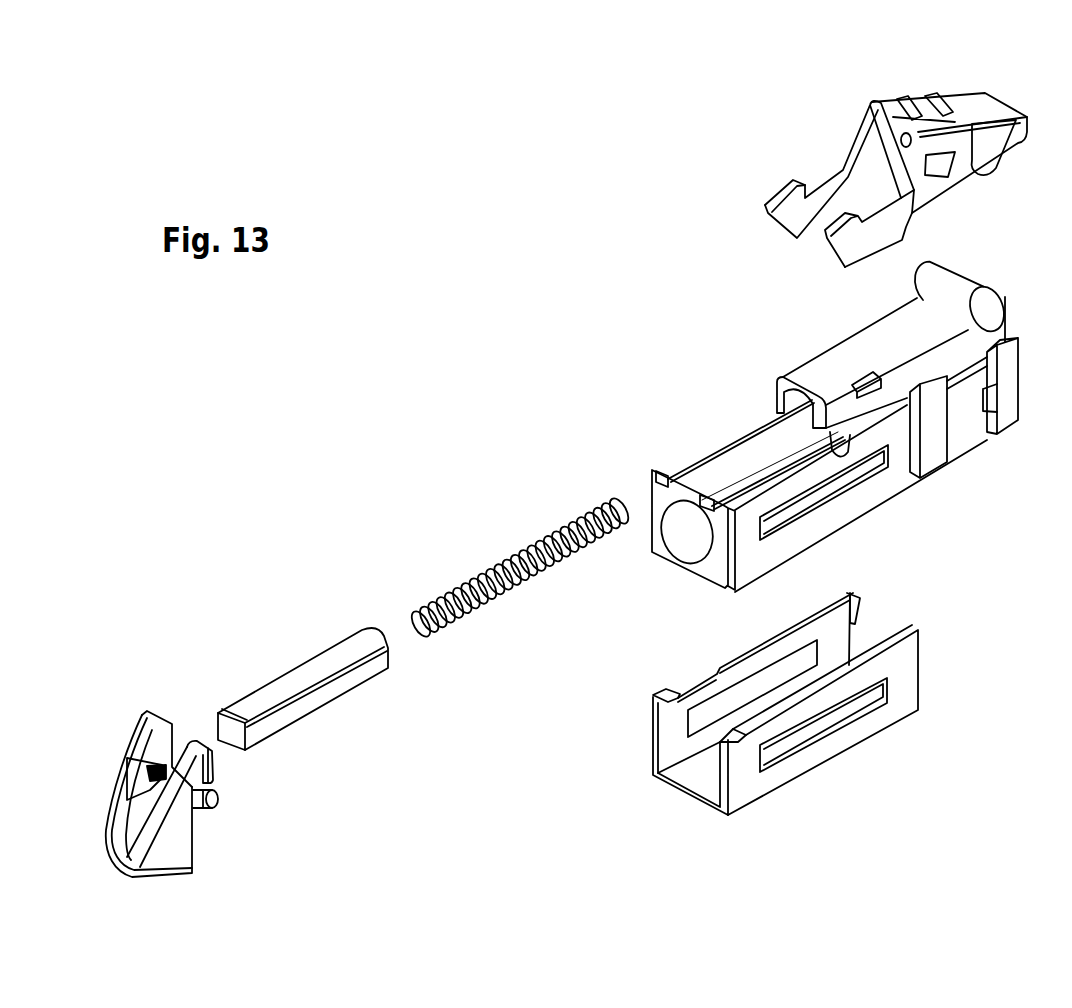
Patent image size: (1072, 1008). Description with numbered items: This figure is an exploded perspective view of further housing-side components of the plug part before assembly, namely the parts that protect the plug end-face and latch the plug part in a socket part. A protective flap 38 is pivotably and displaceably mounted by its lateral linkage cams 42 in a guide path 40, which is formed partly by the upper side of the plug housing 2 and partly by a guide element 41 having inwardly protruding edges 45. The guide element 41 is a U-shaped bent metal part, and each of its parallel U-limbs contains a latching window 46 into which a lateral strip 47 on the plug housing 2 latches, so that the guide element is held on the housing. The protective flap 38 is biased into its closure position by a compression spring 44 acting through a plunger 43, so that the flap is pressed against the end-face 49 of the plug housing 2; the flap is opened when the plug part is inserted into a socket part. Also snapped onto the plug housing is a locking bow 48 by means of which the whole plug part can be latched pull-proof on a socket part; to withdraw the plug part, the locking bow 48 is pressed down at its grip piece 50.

The plug housing 2 is at (810, 433).
The protective flap 38 is at (182, 799).
The guide path 40 is at (760, 486).
The guide element 41 is at (797, 715).
The lateral linkage cams 42 is at (220, 808).
The plunger 43 is at (303, 675).
The compression spring 44 is at (507, 558).
The inwardly protruding edges 45 is at (853, 623).
The latching window 46 is at (817, 728).
The lateral strip 47 is at (878, 482).
The locking bow 48 is at (878, 156).
The end-face 49 is at (656, 550).
The grip piece 50 is at (985, 106).